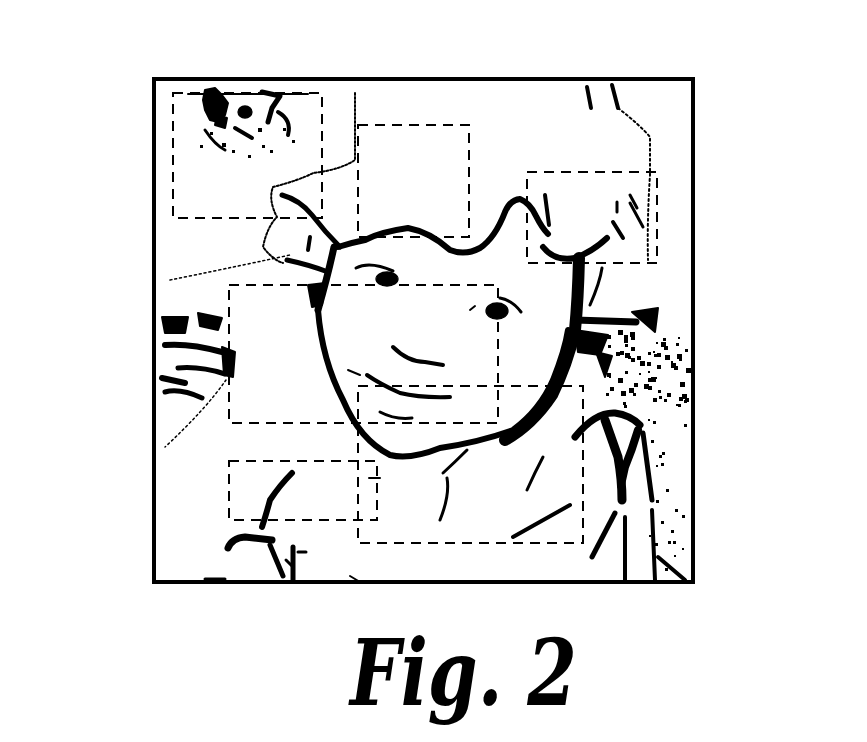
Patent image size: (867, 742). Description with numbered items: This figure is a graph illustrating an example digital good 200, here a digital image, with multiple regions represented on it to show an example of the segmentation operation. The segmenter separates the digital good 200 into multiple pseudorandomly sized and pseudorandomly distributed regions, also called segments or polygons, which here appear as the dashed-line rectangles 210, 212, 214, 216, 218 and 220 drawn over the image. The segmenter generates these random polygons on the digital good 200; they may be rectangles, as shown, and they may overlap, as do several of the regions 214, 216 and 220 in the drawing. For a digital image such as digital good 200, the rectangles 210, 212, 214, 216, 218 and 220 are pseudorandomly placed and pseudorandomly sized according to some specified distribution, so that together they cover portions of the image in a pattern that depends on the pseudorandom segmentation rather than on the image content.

The image 200 is at (733, 537).
The first region of interest 210 is at (418, 125).
The second region of interest 212 is at (173, 155).
The third region of interest 214 is at (229, 313).
The fourth region of interest 216 is at (229, 507).
The fifth region of interest 218 is at (590, 172).
The sixth region of interest 220 is at (583, 386).